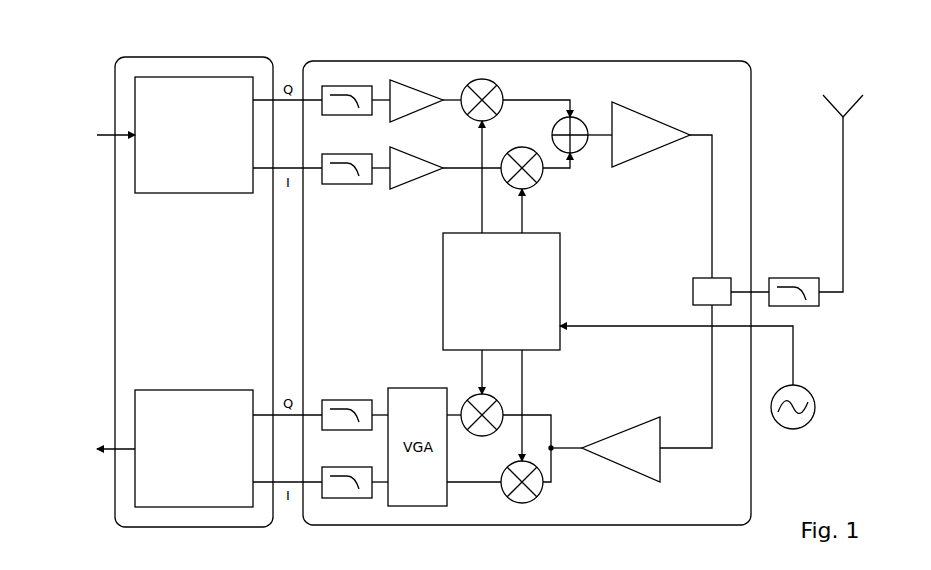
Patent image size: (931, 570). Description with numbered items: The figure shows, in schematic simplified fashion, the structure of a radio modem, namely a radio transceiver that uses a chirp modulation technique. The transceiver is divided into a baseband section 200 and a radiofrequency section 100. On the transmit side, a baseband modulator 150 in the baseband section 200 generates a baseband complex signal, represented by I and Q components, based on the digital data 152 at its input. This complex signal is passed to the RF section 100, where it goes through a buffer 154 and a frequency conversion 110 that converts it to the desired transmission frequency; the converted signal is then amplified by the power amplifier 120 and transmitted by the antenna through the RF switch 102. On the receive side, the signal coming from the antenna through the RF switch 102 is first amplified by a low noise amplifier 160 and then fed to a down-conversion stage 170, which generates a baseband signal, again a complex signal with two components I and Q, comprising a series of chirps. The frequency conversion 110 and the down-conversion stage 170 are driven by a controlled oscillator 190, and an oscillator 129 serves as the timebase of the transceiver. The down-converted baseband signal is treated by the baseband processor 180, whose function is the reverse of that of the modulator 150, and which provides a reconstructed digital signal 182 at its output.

The RF section 100 is at (751, 238).
The RF switch 102 is at (693, 278).
The frequency conversion 110 is at (487, 80).
The power amplifier 120 is at (670, 120).
The oscillator, timebase 129 is at (793, 430).
The baseband modulator 150 is at (235, 77).
The digital signal to transmit 152 is at (73, 122).
The buffer 154 is at (410, 85).
The low noise amplifier 160 is at (662, 463).
The down-conversion stage 170 is at (517, 502).
The baseband processor 180 is at (235, 508).
The reconstructed digital signal 182 is at (73, 463).
The controlled oscillator 190 is at (443, 242).
The baseband section 200 is at (115, 273).